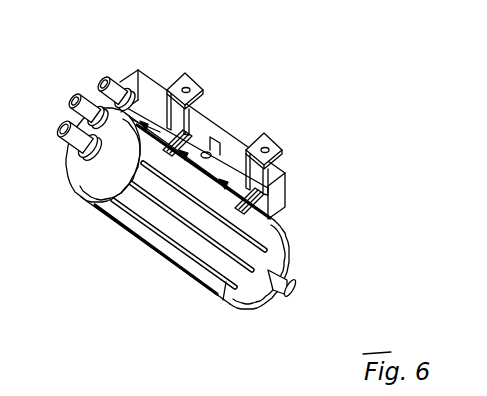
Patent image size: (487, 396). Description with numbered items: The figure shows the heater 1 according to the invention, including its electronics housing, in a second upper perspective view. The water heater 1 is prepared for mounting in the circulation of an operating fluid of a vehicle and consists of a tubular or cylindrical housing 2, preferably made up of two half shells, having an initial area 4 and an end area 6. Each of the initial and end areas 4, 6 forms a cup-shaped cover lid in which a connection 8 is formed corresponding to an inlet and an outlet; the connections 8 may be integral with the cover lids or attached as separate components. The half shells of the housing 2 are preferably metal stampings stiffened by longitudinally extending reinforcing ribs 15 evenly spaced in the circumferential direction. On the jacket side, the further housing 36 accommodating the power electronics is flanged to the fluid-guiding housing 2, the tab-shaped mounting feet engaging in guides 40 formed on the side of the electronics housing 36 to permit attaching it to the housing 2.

The heater 1 is at (270, 87).
The housing 2 is at (169, 270).
The initial area 4 is at (71, 187).
The end area 6 is at (285, 254).
The connection 8 is at (56, 133).
The reinforcing ribs 15 is at (228, 285).
The housing of control electronics 36 is at (138, 69).
The guides 40 is at (197, 115).